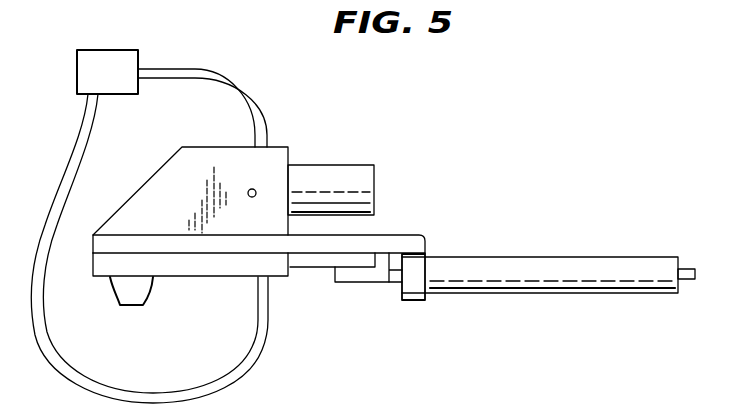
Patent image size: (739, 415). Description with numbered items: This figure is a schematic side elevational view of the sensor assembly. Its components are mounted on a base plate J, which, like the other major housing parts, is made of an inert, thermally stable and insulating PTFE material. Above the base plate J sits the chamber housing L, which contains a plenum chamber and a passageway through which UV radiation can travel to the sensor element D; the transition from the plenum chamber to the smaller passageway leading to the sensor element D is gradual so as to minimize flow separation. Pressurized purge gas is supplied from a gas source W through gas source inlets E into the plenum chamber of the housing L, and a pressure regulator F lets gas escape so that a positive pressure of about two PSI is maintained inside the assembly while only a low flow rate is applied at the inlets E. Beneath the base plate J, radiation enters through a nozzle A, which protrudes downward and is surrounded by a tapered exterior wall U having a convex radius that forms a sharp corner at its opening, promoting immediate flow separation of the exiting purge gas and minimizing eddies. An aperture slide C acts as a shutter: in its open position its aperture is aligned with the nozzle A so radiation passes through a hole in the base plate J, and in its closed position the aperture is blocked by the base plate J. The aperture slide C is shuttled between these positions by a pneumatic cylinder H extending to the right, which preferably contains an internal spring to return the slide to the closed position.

The gas source W is at (82, 68).
The gas source inlets E is at (262, 123).
The chamber housing L is at (152, 190).
The pressure regulator F is at (256, 190).
The sensor element D is at (367, 165).
The base plate J is at (403, 236).
The tapered exterior wall U is at (118, 280).
The nozzle A is at (141, 304).
The aperture slide C is at (312, 270).
The pneumatic cylinder H is at (615, 257).